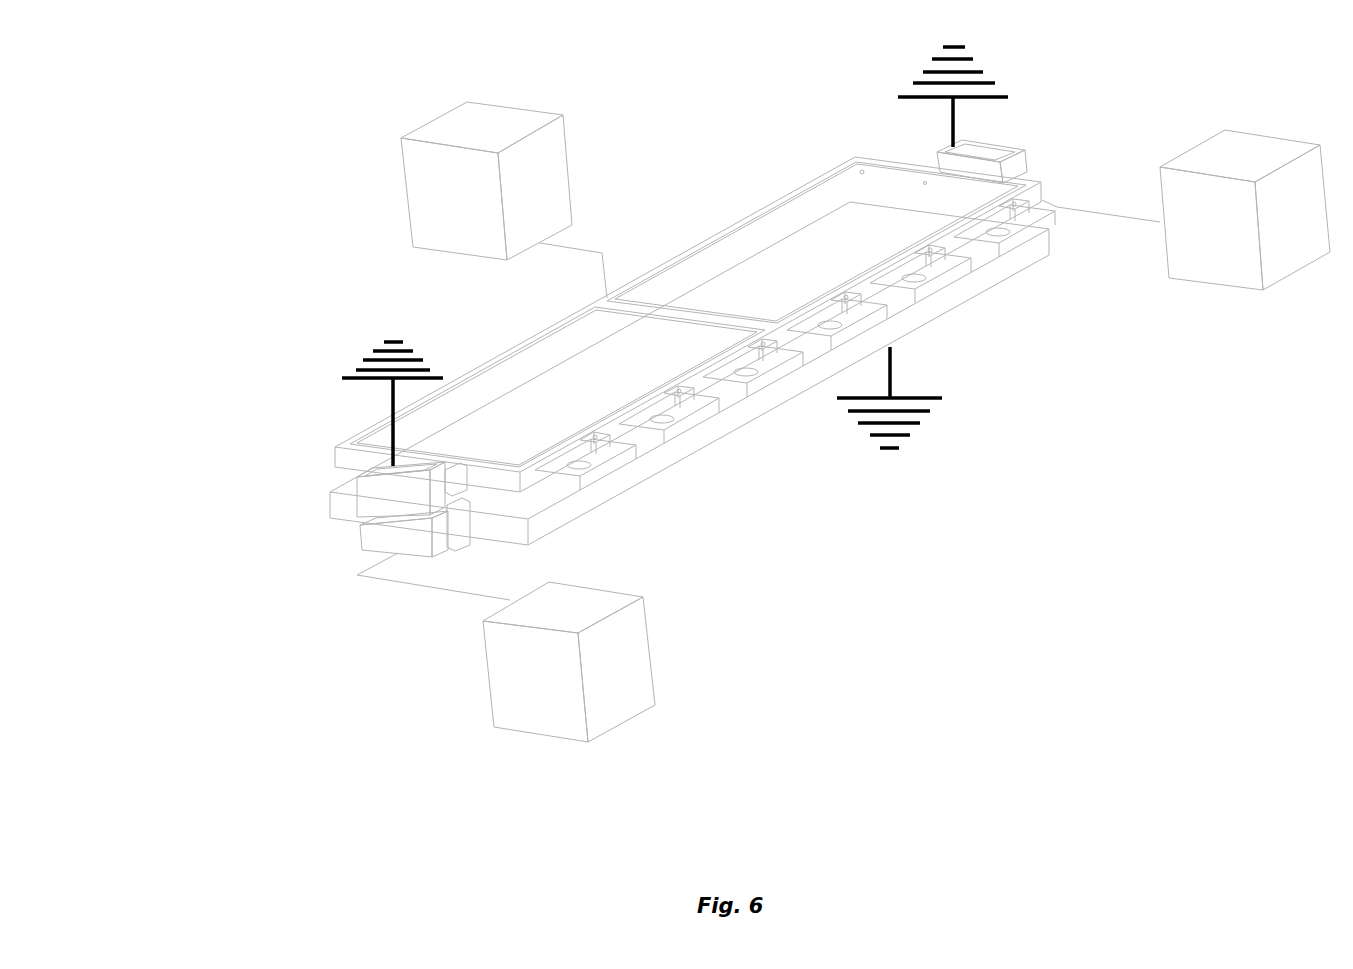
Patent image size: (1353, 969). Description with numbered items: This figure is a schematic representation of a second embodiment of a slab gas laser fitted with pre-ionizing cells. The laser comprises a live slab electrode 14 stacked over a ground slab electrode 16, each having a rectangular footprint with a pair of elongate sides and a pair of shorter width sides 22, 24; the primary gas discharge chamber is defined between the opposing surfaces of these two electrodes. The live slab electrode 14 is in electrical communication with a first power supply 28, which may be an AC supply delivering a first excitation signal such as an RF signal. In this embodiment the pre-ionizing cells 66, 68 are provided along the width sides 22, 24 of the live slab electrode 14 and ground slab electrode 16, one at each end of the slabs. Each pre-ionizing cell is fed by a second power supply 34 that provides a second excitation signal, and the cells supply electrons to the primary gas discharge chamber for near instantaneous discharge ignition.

The live slab electrode 14 is at (589, 334).
The ground slab electrode 16 is at (785, 397).
The width side 22 is at (350, 455).
The width side 24 is at (1040, 182).
The first power supply 28 is at (466, 212).
The second power supply 34 is at (528, 704).
The pre-ionizing cell 66 is at (350, 507).
The pre-ionizing cell 68 is at (1020, 147).